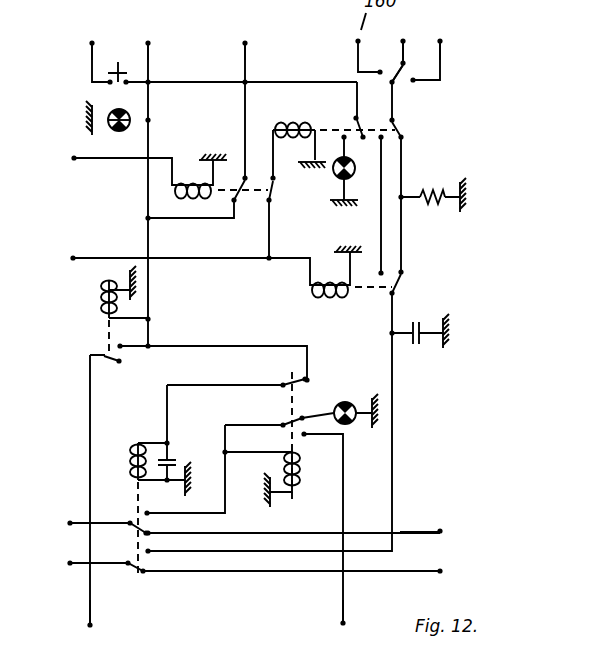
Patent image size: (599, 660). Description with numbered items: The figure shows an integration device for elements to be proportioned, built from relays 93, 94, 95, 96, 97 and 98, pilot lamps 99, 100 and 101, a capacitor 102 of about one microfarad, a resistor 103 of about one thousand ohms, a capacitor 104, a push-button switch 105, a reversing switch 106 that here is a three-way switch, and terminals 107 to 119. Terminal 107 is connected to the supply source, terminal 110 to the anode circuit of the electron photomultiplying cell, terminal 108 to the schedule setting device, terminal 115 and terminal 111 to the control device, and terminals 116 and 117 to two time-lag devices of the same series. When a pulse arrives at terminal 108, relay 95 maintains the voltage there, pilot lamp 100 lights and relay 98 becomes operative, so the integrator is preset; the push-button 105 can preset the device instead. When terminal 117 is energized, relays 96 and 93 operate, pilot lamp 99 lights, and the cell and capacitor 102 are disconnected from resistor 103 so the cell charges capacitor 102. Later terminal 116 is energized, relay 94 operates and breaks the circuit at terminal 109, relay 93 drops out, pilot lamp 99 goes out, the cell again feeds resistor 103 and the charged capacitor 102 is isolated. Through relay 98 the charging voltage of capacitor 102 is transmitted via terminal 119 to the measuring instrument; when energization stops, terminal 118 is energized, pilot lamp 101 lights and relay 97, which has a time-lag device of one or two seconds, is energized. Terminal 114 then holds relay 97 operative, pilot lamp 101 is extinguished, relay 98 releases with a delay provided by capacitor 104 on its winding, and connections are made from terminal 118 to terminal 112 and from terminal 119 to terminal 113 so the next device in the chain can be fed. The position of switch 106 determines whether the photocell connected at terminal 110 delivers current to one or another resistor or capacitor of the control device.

The relay 93 is at (292, 124).
The relay 94 is at (178, 190).
The relay 95 is at (100, 298).
The relay 96 is at (310, 288).
The relay 97 is at (299, 485).
The relay 98 is at (133, 445).
The pilot lamp 99 is at (334, 175).
The pilot lamp 100 is at (119, 131).
The pilot lamp 101 is at (345, 401).
The capacitor 102 is at (418, 340).
The resistor 103 is at (425, 202).
The capacitor 104 is at (174, 466).
The push-button switch 105 is at (121, 70).
The reversing switch 106 is at (396, 78).
The terminal 107 is at (96, 39).
The terminal 108 is at (165, 39).
The terminal 109 is at (246, 42).
The terminal 110 is at (410, 33).
The terminal 111 is at (441, 40).
The terminal 112 is at (440, 531).
The terminal 113 is at (440, 571).
The terminal 114 is at (343, 623).
The terminal 115 is at (90, 625).
The terminal 116 is at (74, 158).
The terminal 117 is at (73, 258).
The terminal 118 is at (70, 523).
The terminal 119 is at (70, 563).